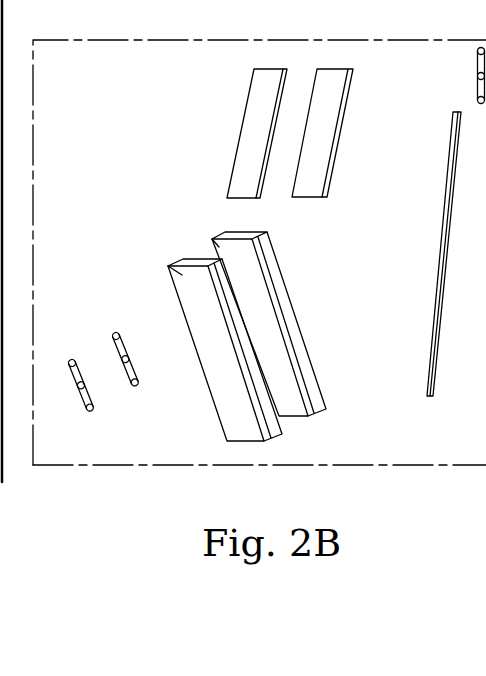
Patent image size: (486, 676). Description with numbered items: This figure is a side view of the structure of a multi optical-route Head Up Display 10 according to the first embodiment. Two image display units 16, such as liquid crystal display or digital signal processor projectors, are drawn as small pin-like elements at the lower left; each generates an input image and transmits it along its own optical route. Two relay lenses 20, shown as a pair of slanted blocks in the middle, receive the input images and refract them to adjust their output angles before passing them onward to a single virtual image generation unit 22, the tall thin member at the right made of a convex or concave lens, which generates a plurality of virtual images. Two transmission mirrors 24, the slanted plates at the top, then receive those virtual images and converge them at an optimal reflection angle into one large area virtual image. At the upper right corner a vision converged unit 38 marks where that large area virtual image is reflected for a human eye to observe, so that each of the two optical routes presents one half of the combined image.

The multi optical-route Head Up Display 10 is at (118, 156).
The image display unit 16 is at (72, 359).
The relay lens 20 is at (168, 265).
The virtual image generation unit 22 is at (427, 396).
The transmission mirror 24 is at (255, 110).
The vision converged unit 38 is at (478, 65).